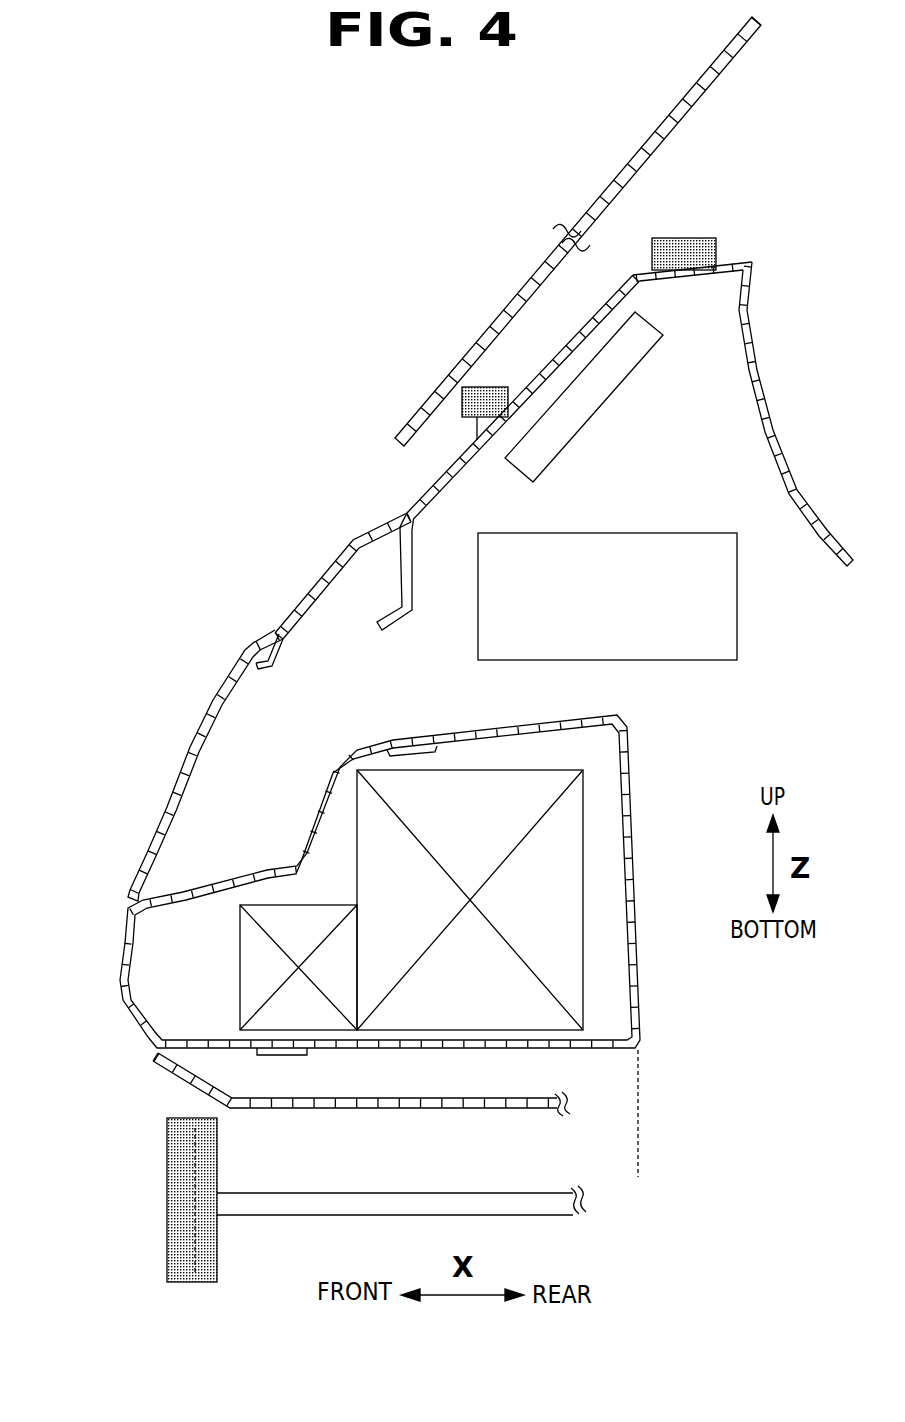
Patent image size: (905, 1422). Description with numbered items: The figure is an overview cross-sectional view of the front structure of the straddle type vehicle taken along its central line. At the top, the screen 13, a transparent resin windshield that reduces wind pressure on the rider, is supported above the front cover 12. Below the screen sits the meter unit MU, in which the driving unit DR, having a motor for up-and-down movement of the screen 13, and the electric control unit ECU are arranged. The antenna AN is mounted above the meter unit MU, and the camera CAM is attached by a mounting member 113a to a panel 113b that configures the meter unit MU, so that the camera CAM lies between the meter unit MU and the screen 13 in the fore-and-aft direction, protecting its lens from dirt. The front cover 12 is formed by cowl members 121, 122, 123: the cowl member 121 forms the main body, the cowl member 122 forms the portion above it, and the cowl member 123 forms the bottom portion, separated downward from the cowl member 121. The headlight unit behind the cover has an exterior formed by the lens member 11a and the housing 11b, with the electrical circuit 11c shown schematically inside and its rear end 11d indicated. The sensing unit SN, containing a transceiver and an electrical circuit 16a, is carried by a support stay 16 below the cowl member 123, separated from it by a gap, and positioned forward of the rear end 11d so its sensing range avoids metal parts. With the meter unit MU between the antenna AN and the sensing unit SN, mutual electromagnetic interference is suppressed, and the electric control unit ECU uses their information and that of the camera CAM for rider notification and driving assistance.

The front cover 12 is at (170, 640).
The screen 13 is at (468, 350).
The mounting member 113a is at (480, 437).
The panel 113b is at (425, 503).
The cowl member 121 is at (190, 747).
The cowl member 122 is at (320, 582).
The cowl member 123 is at (165, 1070).
The lens member 11a is at (127, 940).
The housing 11b is at (628, 747).
The electrical circuit 11c is at (583, 992).
The rear end 11d is at (638, 1160).
The support stay 16 is at (283, 1203).
The electrical circuit 16a is at (190, 1170).
The sensing unit SN is at (187, 1235).
The camera CAM is at (463, 397).
The antenna AN is at (690, 238).
The driving unit DR is at (595, 403).
The electric control unit ECU is at (718, 627).
The meter unit MU is at (775, 414).